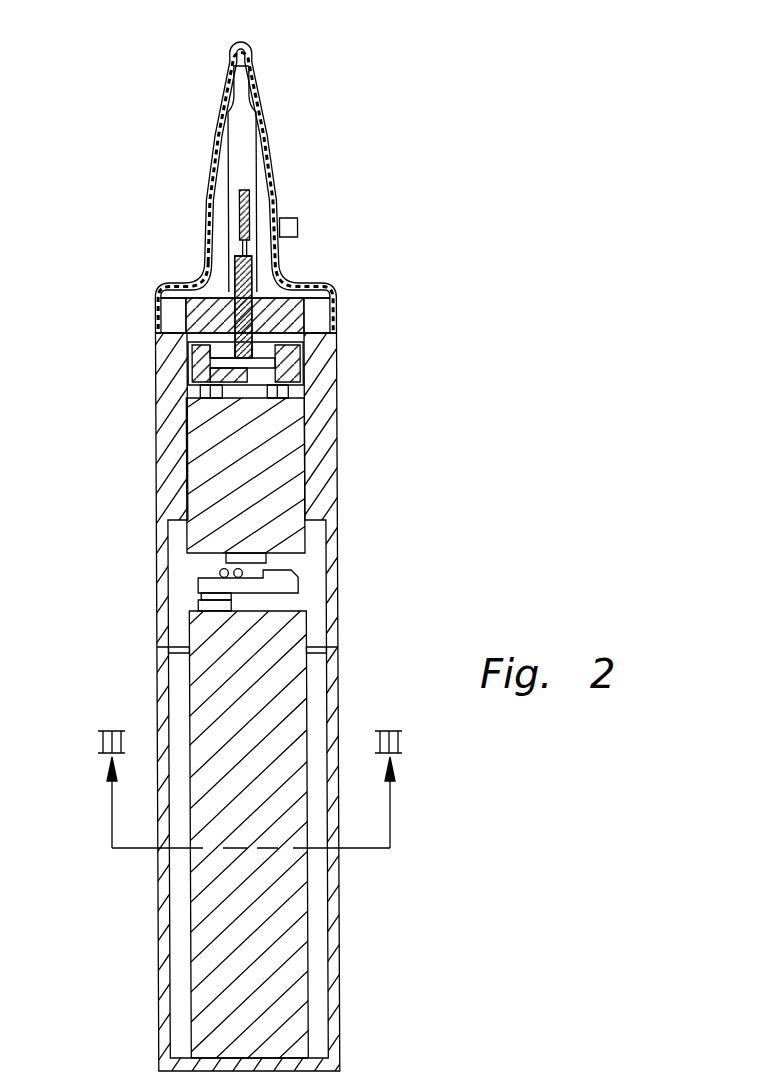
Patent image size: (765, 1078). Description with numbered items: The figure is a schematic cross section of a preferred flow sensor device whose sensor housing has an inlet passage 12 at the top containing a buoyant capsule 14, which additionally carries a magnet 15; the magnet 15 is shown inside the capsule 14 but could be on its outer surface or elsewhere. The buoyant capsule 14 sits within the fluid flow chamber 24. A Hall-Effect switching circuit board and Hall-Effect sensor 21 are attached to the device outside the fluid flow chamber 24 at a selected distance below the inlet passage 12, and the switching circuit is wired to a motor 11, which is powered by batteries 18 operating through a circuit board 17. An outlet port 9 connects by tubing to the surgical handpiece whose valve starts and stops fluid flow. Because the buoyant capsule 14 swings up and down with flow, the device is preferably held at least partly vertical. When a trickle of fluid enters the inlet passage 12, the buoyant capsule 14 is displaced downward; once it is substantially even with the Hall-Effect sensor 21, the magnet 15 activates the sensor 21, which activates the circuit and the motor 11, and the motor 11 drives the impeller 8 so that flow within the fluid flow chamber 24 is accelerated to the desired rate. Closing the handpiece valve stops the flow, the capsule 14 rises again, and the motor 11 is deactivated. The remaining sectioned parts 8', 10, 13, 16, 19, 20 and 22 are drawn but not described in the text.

The impeller 8 is at (260, 272).
The cap sheet inner portion 8' is at (151, 316).
The outlet port 9 is at (312, 310).
The valve assembly 10 is at (202, 355).
The motor 11 is at (253, 453).
The inlet passage 12 is at (247, 43).
The cap assembly 13 is at (345, 290).
The buoyant capsule 14 is at (244, 200).
The magnet 15 is at (243, 307).
The outer housing 16 is at (328, 466).
The circuit board 17 is at (289, 582).
The batteries 18 is at (283, 637).
The lower charge block 19 is at (277, 730).
The housing base 20 is at (340, 918).
The Hall-Effect sensor 21 is at (299, 223).
The nozzle 22 is at (275, 158).
The fluid flow chamber 24 is at (245, 133).